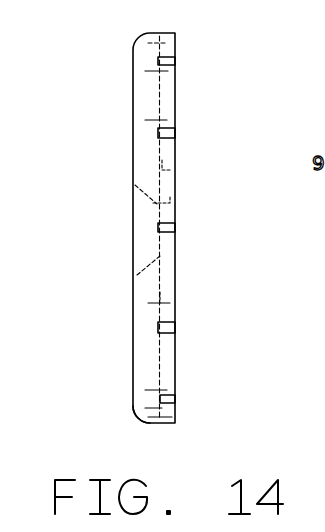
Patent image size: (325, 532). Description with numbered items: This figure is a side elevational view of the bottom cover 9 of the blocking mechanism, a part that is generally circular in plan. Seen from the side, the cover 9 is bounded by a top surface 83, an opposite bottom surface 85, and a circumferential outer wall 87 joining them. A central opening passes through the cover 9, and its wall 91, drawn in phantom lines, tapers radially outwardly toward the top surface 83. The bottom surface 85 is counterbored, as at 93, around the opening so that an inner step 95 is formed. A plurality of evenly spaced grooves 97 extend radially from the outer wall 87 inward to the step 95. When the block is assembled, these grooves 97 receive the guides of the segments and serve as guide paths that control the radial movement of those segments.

The bottom cover 9 is at (187, 40).
The top surface 83 is at (132, 123).
The bottom surface 85 is at (177, 100).
The circumferential outer wall 87 is at (152, 423).
The wall 91 is at (143, 272).
The counterbore 93 is at (165, 201).
The inner step 95 is at (165, 294).
The grooves 97 is at (170, 134).